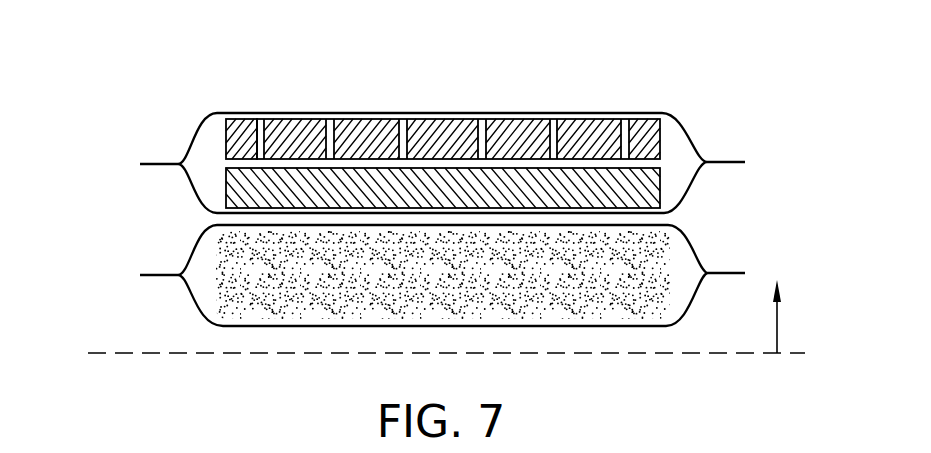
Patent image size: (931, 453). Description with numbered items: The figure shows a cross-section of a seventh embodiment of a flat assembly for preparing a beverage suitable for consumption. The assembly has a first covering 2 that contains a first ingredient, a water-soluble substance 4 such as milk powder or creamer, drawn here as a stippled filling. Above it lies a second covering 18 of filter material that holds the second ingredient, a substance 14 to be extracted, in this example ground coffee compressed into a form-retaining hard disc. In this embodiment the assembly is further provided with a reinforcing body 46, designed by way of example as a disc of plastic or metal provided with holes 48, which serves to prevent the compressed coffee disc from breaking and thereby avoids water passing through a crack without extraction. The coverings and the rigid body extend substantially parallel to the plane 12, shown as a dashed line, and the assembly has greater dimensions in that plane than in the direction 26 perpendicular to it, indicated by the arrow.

The first covering 2 is at (631, 325).
The water-soluble substance 4 is at (563, 292).
The plane 12 is at (693, 353).
The substance to be extracted 14 is at (237, 190).
The second covering 18 is at (538, 113).
The direction perpendicular to the plane 26 is at (780, 325).
The reinforcing body 46 is at (240, 139).
The holes 48 is at (402, 113).